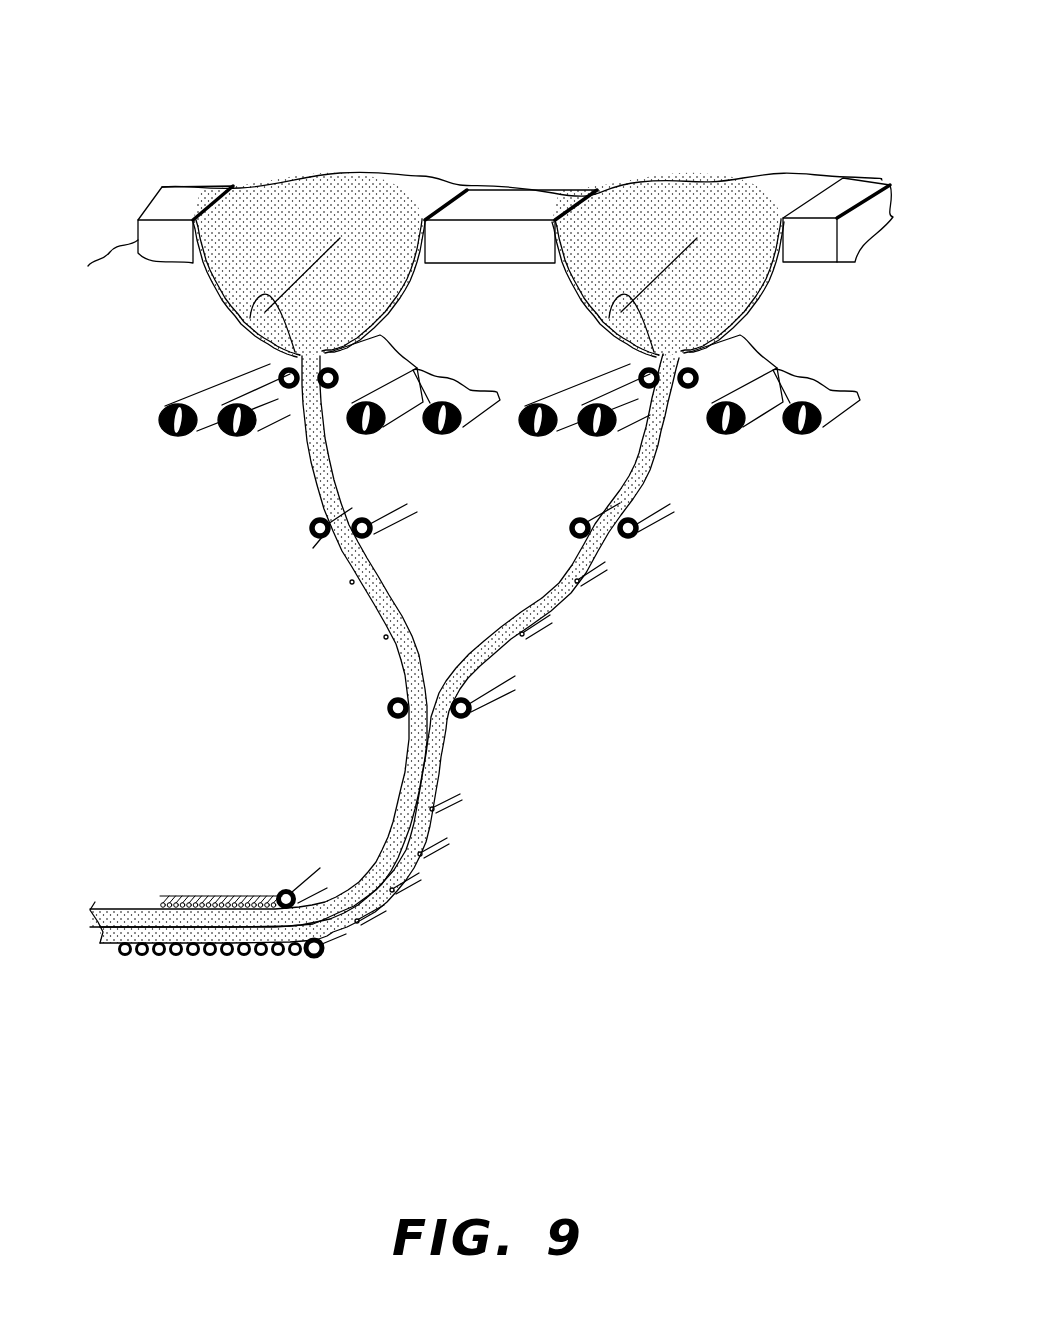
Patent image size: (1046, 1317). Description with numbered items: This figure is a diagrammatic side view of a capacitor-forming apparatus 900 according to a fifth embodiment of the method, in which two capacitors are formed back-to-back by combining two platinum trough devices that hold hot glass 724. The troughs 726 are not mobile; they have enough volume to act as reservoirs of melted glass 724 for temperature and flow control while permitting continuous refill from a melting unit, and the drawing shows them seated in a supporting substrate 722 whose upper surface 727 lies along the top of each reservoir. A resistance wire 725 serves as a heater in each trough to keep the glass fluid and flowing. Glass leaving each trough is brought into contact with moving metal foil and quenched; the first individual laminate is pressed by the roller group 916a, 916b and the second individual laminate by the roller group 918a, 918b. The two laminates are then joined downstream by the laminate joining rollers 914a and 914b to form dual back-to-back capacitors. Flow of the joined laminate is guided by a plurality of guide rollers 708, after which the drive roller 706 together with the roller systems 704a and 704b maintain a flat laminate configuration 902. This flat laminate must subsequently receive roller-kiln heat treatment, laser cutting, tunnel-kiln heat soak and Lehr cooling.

The fluidic device 900 is at (140, 66).
The hot glass 724 is at (330, 200).
The substrate top face 727 is at (205, 200).
The substrate 722 is at (157, 252).
The resistance wire 725 is at (258, 337).
The troughs 726 is at (253, 306).
The flat laminate configuration 902 is at (97, 944).
The roller group 916a is at (318, 532).
The roller group 916b is at (370, 545).
The roller group 918a is at (572, 528).
The roller group 918b is at (633, 536).
The laminate joining roller 914a is at (393, 716).
The laminate joining roller 914b is at (467, 714).
The drive roller 706 is at (285, 890).
The lower rollers 704a is at (315, 960).
The upper rollers 704b is at (270, 890).
The guide rollers 708 is at (492, 790).